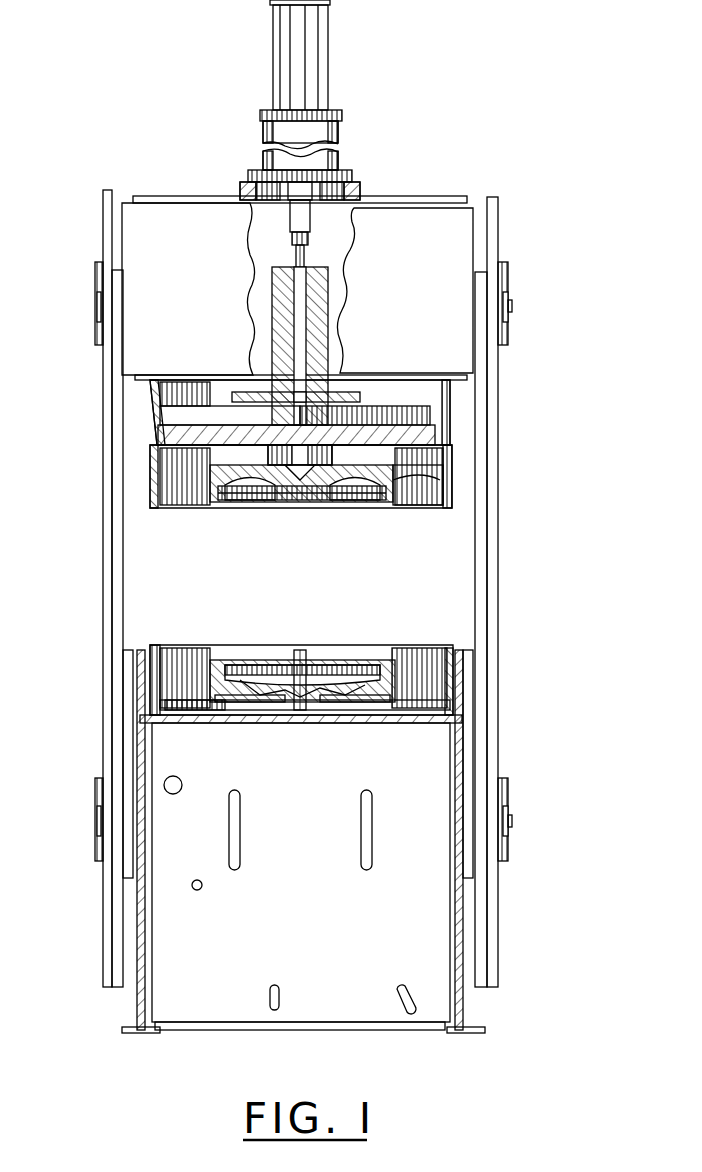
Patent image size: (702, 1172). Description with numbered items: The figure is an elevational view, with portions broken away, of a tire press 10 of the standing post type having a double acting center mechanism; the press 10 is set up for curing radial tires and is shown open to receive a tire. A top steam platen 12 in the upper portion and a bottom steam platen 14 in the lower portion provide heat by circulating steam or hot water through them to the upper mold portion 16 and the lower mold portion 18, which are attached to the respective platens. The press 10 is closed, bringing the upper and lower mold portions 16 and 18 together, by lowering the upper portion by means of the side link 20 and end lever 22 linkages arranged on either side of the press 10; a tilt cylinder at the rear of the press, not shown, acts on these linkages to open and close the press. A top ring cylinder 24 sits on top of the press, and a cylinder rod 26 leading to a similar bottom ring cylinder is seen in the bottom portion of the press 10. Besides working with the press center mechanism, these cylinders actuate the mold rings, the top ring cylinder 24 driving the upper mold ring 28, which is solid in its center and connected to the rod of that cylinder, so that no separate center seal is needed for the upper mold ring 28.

The tire press 10 is at (472, 132).
The top steam platen 12 is at (452, 458).
The bottom steam platen 14 is at (392, 712).
The upper mold portion 16 is at (405, 506).
The lower mold portion 18 is at (392, 667).
The side link 20 is at (103, 522).
The end lever 22 is at (123, 556).
The top ring cylinder 24 is at (330, 48).
The cylinder rod 26 is at (306, 665).
The upper mold ring 28 is at (333, 502).